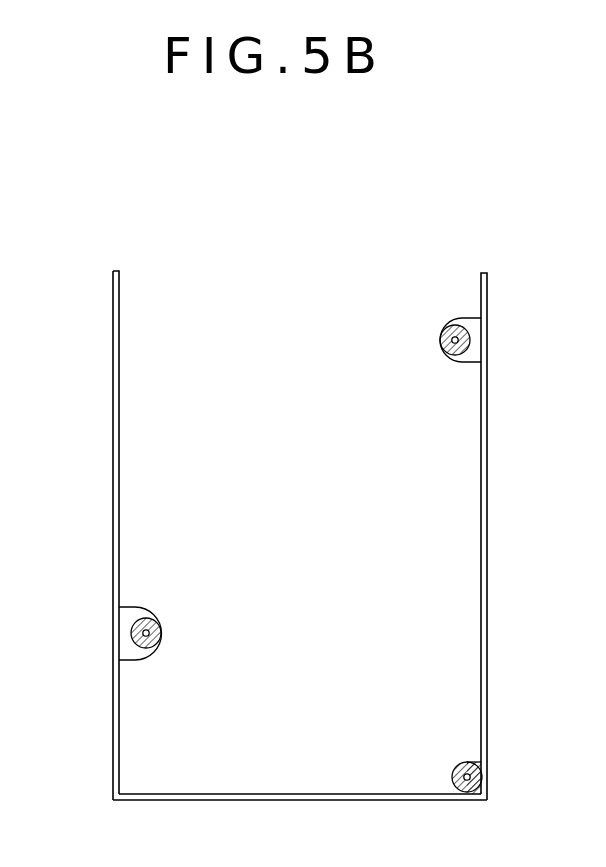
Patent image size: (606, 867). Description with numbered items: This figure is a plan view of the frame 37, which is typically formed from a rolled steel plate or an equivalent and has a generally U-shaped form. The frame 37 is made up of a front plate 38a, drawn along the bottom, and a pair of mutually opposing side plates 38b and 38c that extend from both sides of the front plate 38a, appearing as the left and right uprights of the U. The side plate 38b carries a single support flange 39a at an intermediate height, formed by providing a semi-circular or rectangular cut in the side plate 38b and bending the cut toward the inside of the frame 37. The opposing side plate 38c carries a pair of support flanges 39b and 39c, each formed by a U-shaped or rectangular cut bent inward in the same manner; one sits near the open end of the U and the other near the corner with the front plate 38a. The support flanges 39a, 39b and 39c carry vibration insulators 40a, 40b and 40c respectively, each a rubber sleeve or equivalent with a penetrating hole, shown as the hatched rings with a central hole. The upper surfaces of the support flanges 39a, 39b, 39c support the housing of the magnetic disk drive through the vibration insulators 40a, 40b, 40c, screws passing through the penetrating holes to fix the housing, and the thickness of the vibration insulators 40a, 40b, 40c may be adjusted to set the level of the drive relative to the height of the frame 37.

The frame 37 is at (266, 200).
The front plate 38a is at (305, 800).
The side plate 38b is at (113, 314).
The side plate 38c is at (487, 282).
The support flange 39a is at (127, 608).
The support flange 39b is at (462, 318).
The support flange 39c is at (480, 763).
The vibration insulator 40a is at (158, 635).
The vibration insulator 40b is at (440, 347).
The vibration insulator 40c is at (455, 781).